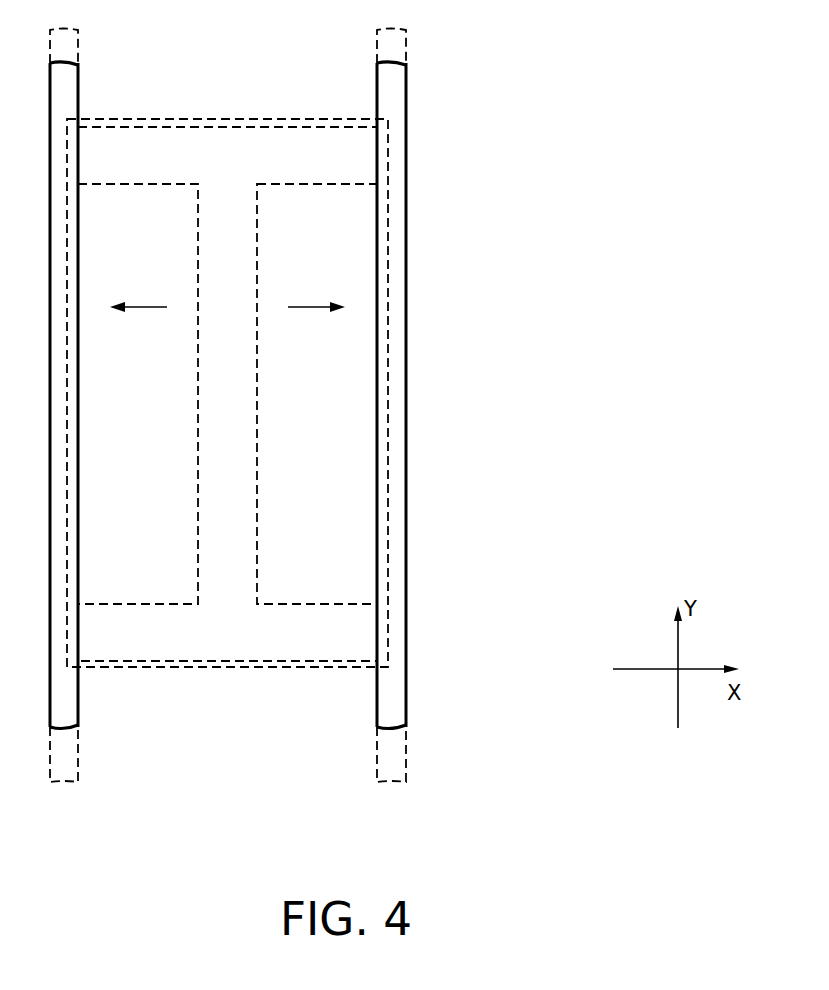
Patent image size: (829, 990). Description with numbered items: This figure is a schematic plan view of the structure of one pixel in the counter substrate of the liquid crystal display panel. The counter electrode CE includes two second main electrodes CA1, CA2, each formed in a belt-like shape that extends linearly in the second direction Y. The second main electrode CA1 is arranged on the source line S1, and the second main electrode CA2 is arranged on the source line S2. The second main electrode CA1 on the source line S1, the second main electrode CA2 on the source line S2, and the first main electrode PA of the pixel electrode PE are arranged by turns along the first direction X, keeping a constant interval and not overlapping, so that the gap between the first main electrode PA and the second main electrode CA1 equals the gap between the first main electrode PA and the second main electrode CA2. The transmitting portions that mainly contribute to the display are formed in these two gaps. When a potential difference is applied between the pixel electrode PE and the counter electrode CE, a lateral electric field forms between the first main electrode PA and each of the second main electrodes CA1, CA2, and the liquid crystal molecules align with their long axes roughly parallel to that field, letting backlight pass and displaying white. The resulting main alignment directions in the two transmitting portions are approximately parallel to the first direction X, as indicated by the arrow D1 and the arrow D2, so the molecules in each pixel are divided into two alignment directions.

The source line S1 is at (65, 777).
The source line S2 is at (390, 782).
The second main electrode CA1 is at (67, 710).
The second main electrode CA2 is at (380, 708).
The counter electrode CE is at (415, 684).
The first main electrode PA is at (238, 497).
The pixel electrode PE is at (262, 391).
The arrow D1 is at (143, 307).
The arrow D2 is at (313, 307).